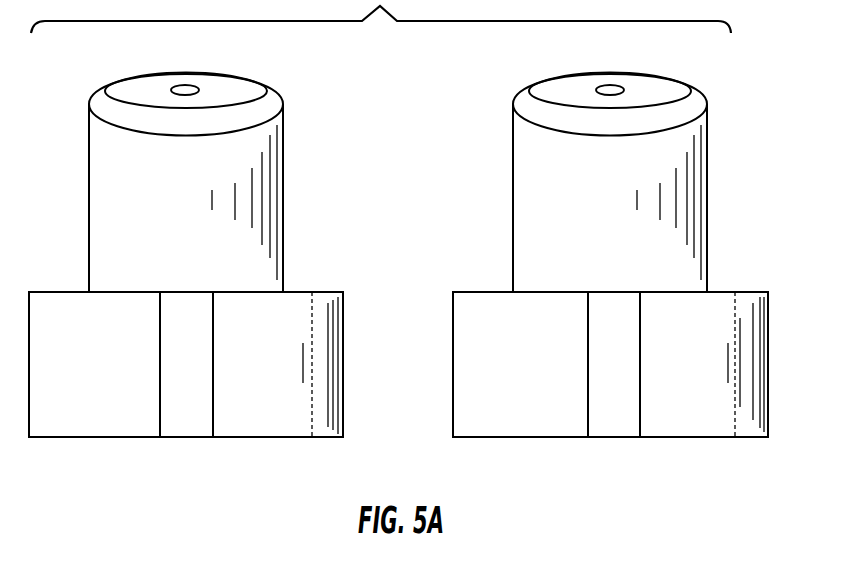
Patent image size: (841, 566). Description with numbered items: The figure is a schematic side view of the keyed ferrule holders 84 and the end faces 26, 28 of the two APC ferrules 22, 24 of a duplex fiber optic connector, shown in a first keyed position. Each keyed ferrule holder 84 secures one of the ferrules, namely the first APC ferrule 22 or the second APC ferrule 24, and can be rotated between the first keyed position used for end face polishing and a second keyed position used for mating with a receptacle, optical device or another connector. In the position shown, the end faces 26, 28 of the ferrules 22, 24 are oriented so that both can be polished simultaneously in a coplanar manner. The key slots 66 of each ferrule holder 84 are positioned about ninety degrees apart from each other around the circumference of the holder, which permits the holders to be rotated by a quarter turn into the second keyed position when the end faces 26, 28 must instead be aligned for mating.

The first APC ferrule 22 is at (89, 200).
The second APC ferrule 24 is at (708, 191).
The end face 26 is at (163, 83).
The end face 28 is at (552, 82).
The key slot 66 is at (180, 433).
The keyed ferrule holder 84 is at (92, 413).